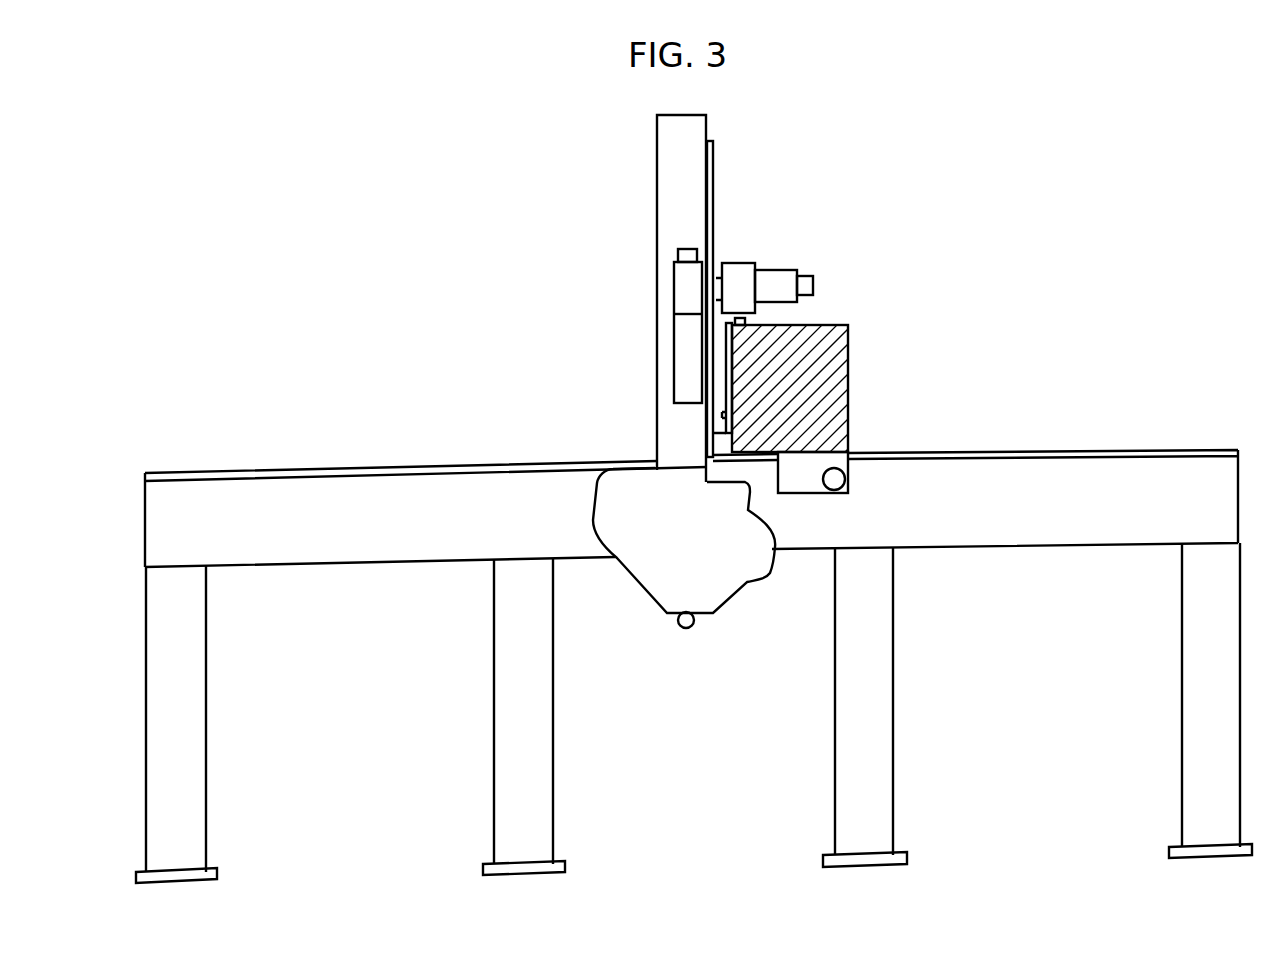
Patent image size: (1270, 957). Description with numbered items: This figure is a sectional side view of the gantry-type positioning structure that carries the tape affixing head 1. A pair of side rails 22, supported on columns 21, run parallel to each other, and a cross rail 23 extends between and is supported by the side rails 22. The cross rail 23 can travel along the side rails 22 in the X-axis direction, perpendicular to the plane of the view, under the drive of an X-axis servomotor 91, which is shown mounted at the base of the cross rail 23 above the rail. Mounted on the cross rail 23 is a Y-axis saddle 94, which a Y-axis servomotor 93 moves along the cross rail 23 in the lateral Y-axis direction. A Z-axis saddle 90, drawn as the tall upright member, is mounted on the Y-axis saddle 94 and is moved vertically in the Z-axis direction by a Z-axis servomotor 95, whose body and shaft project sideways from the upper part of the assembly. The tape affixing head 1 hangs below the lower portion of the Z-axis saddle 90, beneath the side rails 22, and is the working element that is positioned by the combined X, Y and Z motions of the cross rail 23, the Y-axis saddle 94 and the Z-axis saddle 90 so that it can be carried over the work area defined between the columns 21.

The tape affixing head 1 is at (660, 593).
The columns 21 is at (500, 780).
The side rails 22 is at (1065, 502).
The cross rail 23 is at (850, 375).
The Z-axis saddle 90 is at (697, 119).
The X-axis servomotor 91 is at (823, 490).
The Y-axis servomotor 93 is at (677, 268).
The Y-axis saddle 94 is at (720, 377).
The Z-axis servomotor 95 is at (777, 275).